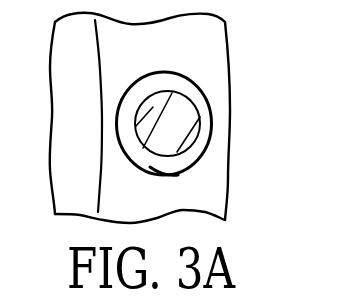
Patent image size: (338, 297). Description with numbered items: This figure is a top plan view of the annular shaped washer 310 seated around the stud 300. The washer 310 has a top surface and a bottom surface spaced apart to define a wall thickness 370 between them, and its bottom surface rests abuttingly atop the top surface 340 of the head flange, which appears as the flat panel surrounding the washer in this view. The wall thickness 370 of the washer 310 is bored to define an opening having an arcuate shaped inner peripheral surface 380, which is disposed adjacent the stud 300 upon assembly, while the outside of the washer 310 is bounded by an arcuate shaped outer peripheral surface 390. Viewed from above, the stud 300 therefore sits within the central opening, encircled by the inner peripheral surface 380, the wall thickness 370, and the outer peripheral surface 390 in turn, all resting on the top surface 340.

The stud 300 is at (183, 128).
The annular shaped washer 310 is at (211, 58).
The top surface 340 is at (208, 178).
The wall thickness 370 is at (211, 146).
The arcuate shaped inner peripheral surface 380 is at (153, 106).
The arcuate shaped outer peripheral surface 390 is at (178, 177).